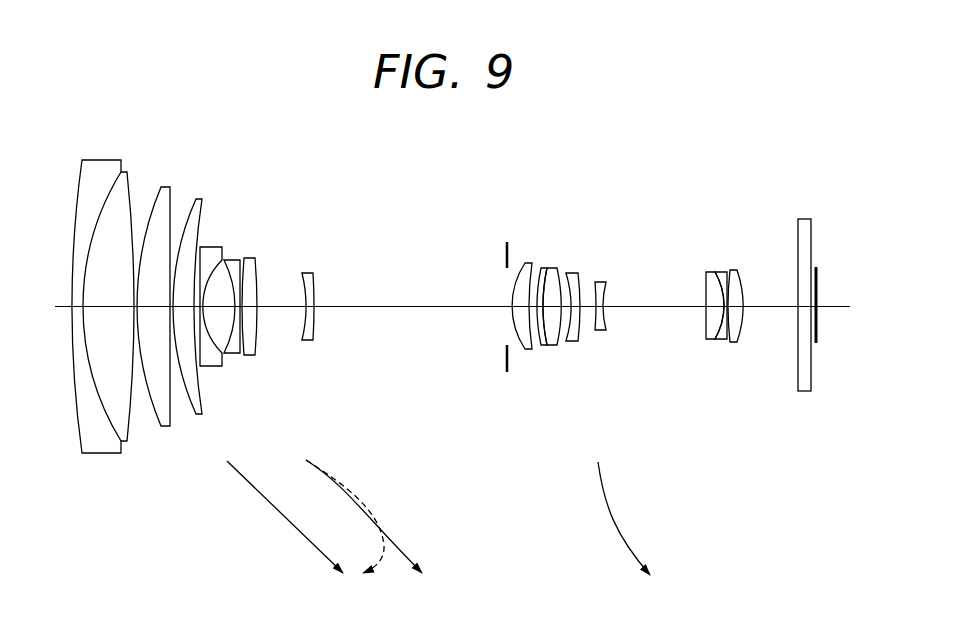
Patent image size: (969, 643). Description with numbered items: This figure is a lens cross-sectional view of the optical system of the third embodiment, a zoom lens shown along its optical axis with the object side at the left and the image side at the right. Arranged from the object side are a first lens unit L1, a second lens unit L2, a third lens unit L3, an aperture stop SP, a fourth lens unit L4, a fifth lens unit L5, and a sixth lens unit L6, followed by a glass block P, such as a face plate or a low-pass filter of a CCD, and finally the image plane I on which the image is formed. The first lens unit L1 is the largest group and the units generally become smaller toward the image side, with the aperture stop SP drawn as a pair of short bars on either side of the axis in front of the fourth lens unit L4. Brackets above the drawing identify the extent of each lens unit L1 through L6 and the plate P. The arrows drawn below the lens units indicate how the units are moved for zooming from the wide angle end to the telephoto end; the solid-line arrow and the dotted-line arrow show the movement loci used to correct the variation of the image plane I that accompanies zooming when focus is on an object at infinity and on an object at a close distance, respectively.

The first lens unit L1 is at (73, 152).
The second lens unit L2 is at (259, 152).
The third lens unit L3 is at (315, 152).
The fourth lens unit L4 is at (513, 152).
The fifth lens unit L5 is at (591, 152).
The sixth lens unit L6 is at (704, 152).
The aperture stop SP is at (507, 372).
The glass block P is at (813, 152).
The image plane I is at (816, 267).